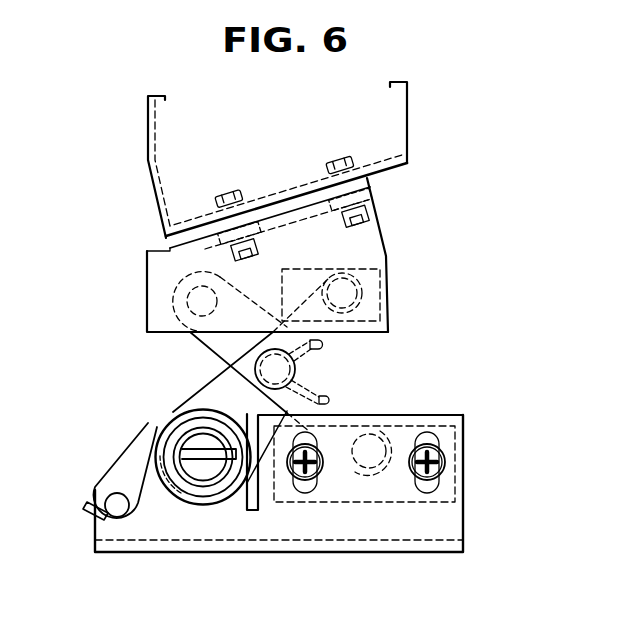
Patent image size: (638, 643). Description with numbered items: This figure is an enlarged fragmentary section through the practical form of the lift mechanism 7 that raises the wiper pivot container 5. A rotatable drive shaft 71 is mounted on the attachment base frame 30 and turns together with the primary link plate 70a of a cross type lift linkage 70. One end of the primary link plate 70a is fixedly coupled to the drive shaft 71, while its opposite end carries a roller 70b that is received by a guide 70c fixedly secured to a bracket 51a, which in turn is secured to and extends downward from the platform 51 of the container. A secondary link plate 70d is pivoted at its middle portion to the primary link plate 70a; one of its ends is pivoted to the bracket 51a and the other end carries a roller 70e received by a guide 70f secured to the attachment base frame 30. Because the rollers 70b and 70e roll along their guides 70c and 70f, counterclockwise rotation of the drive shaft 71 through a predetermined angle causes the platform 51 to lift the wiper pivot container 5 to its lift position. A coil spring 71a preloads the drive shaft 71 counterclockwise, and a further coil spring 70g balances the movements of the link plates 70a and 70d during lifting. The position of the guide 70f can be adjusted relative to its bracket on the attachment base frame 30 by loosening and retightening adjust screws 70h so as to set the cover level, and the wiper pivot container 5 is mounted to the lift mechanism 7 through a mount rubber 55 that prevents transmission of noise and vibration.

The wiper pivot container 5 is at (398, 127).
The platform 51 is at (407, 165).
The bracket 51a is at (385, 236).
The mount rubber 55 is at (372, 183).
The lift mechanism 7 is at (430, 341).
The cross type lift linkage 70 is at (368, 404).
The primary link plate 70a is at (210, 386).
The roller 70b is at (350, 312).
The guide 70c is at (370, 269).
The secondary link plate 70d is at (298, 372).
The roller 70e is at (398, 418).
The guide 70f is at (445, 497).
The coil spring 70g is at (328, 400).
The adjust screws 70h is at (444, 463).
The drive shaft 71 is at (197, 467).
The coil spring 71a is at (146, 470).
The attachment base frame 30 is at (463, 540).